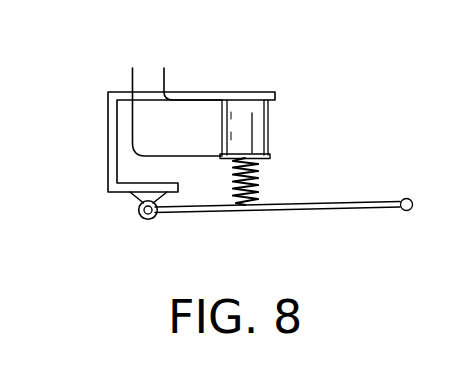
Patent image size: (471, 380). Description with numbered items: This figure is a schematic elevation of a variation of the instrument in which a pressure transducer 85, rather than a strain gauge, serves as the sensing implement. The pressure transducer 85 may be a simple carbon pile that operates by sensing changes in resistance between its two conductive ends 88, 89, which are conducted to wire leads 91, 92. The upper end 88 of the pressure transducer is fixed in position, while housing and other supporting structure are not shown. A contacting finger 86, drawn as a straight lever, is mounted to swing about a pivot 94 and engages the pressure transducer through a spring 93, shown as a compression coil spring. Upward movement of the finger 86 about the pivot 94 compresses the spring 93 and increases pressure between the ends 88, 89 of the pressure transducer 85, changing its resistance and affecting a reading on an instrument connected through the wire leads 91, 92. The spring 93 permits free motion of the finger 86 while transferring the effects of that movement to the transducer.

The pressure transducer 85 is at (257, 127).
The contacting finger 86 is at (323, 210).
The upper conductive end 88 is at (256, 93).
The lower conductive end 89 is at (267, 160).
The wire lead 91 is at (168, 78).
The wire lead 92 is at (132, 82).
The spring 93 is at (262, 178).
The pivot 94 is at (141, 219).